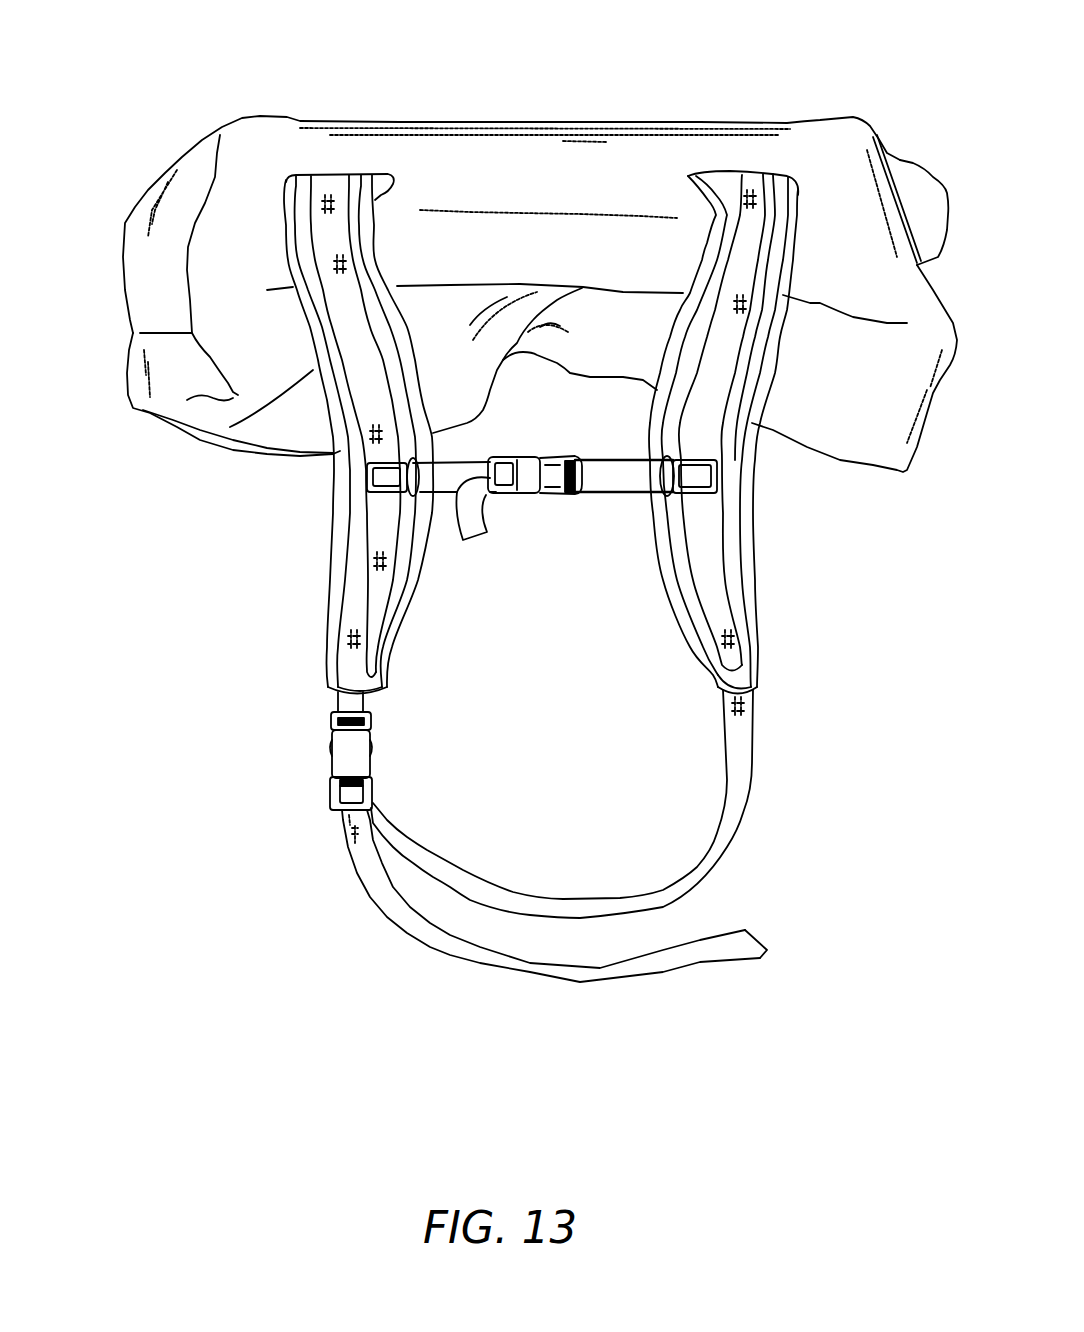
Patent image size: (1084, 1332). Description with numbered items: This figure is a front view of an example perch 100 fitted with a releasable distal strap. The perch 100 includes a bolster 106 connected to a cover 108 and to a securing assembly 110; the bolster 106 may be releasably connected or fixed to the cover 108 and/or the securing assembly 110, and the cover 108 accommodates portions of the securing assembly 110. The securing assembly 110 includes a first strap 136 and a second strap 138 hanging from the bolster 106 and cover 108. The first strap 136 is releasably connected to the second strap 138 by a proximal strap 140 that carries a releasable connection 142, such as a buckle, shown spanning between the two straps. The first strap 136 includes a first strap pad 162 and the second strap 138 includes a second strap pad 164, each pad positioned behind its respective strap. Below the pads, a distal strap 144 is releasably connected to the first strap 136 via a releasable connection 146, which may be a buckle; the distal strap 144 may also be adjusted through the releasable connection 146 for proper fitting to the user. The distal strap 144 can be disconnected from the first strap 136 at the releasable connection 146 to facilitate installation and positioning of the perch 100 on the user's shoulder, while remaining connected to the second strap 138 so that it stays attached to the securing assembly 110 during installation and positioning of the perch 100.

The perch 100 is at (836, 60).
The bolster 106 is at (122, 157).
The cover 108 is at (126, 455).
The first strap 136 is at (340, 362).
The second strap 138 is at (750, 337).
The proximal strap 140 is at (473, 540).
The releasable connection 142 is at (527, 495).
The distal strap 144 is at (740, 817).
The releasable connection 146 is at (328, 765).
The first strap pad 162 is at (316, 434).
The second strap pad 164 is at (770, 432).
The securing assembly 110 is at (570, 836).